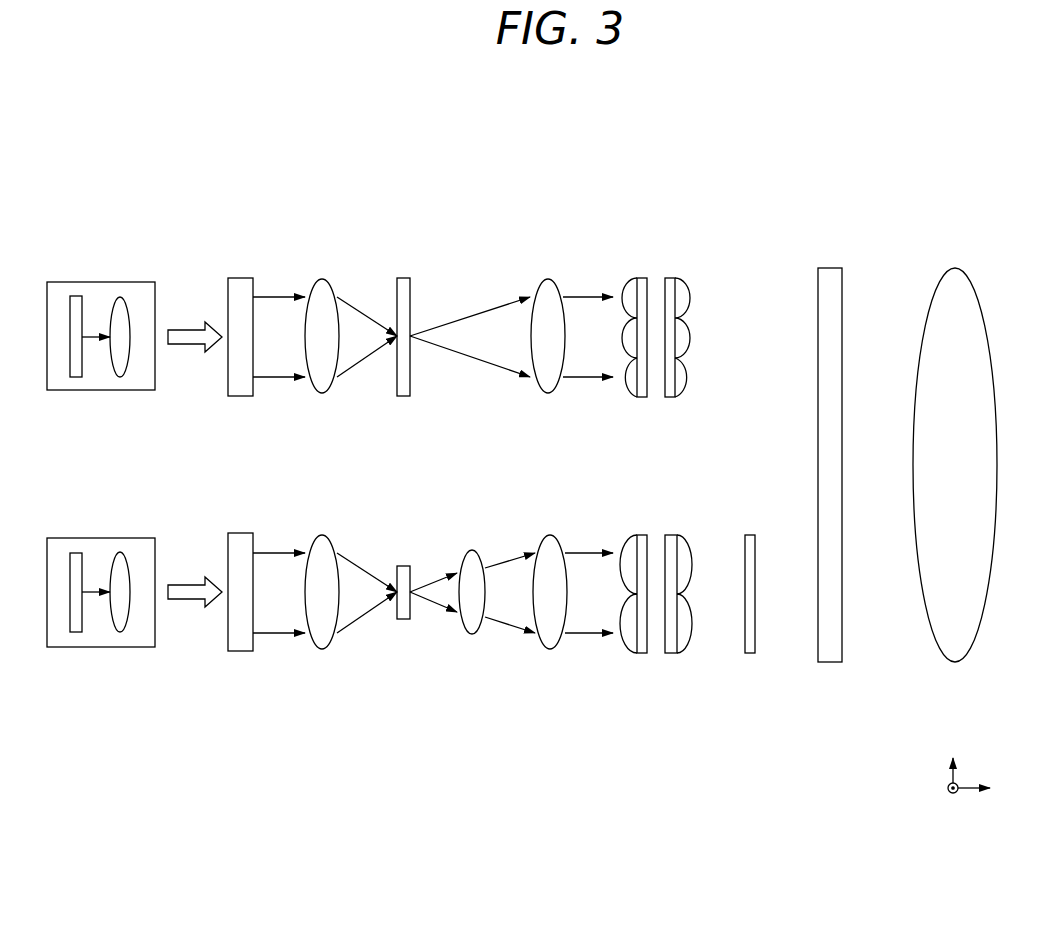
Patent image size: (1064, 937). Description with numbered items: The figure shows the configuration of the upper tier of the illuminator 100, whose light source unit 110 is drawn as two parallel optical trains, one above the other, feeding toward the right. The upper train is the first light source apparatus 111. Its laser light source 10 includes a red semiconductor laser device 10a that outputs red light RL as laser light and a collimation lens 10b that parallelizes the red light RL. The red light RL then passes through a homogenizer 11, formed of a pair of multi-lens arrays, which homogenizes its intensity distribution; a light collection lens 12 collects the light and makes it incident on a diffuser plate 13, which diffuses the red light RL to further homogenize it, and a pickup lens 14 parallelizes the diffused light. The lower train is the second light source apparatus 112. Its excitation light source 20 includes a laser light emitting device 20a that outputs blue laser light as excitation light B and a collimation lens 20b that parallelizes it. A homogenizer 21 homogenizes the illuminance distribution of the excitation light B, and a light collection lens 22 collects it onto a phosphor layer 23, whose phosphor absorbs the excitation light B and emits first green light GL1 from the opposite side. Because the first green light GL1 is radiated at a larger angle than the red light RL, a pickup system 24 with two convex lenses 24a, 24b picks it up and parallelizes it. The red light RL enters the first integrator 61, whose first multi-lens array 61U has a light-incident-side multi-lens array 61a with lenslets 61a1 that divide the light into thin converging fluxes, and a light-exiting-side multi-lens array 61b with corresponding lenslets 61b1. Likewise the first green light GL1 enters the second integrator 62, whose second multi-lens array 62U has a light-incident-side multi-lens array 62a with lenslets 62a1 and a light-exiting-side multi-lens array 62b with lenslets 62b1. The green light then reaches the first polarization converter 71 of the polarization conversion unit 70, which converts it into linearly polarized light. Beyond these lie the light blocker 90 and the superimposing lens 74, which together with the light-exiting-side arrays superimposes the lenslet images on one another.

The illuminator 100 is at (1043, 180).
The light source unit 110 is at (325, 466).
The first light source apparatus 111 is at (201, 185).
The second light source apparatus 112 is at (200, 745).
The laser light source 10 is at (158, 215).
The red semiconductor laser device 10a is at (76, 296).
The collimation lens 10b is at (125, 300).
The homogenizer 11 is at (243, 278).
The light collection lens 12 is at (328, 282).
The diffuser plate 13 is at (405, 278).
The pickup lens 14 is at (540, 285).
The excitation light source 20 is at (158, 725).
The laser light emitting device 20a is at (74, 632).
The collimation lens 20b is at (124, 630).
The homogenizer 21 is at (241, 651).
The light collection lens 22 is at (325, 650).
The phosphor layer 23 is at (403, 619).
The pickup system 24 is at (568, 742).
The convex lens 24a is at (485, 635).
The convex lens 24b is at (548, 650).
The first integrator 61 is at (600, 192).
The first multi-lens array 61U is at (662, 291).
The light-incident-side multi-lens array 61a is at (623, 275).
The light-exiting-side multi-lens array 61b is at (691, 275).
The lenslets 61a1 is at (625, 380).
The lenslets 61b1 is at (686, 380).
The second integrator 62 is at (605, 742).
The second multi-lens array 62U is at (799, 494).
The light-incident-side multi-lens array 62a is at (625, 657).
The light-exiting-side multi-lens array 62b is at (688, 657).
The lenslets 62a1 is at (626, 548).
The lenslets 62b1 is at (686, 550).
The polarization conversion unit 70 is at (790, 630).
The first polarization converter 71 is at (750, 650).
The light blocker 90 is at (828, 272).
The superimposing lens 74 is at (960, 276).
The red light RL is at (89, 333).
The excitation light B is at (89, 598).
The first green light GL1 is at (433, 580).